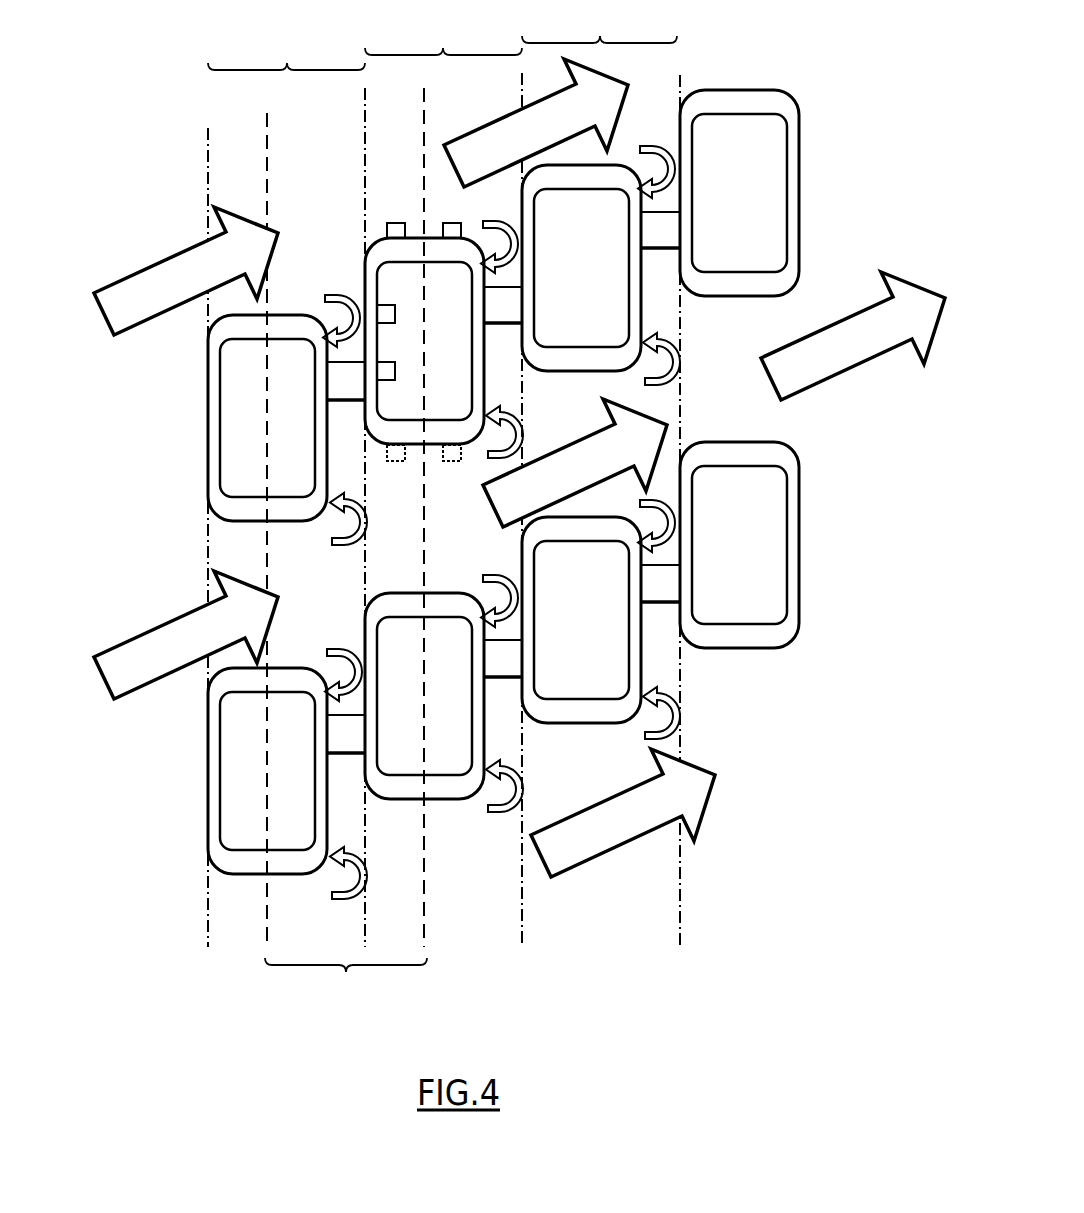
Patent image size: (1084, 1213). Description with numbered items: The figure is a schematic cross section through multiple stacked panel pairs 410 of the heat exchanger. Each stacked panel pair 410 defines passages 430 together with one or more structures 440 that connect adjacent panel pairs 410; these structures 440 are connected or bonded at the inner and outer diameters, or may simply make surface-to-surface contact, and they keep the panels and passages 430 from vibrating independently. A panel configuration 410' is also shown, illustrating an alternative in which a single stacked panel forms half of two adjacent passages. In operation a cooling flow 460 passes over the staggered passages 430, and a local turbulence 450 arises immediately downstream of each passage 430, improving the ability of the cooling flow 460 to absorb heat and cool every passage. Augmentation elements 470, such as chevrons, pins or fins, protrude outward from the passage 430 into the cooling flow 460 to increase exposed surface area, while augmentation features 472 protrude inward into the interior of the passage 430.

The stacked panel pair 410 is at (442, 38).
The panel configuration 410' is at (346, 992).
The passage 430 is at (238, 421).
The structure for connecting adjacent panel pairs 440 is at (348, 385).
The local turbulence 450 is at (342, 296).
The cooling flow 460 is at (140, 290).
The augmentation element 470 is at (395, 222).
The augmentation feature 472 is at (397, 305).